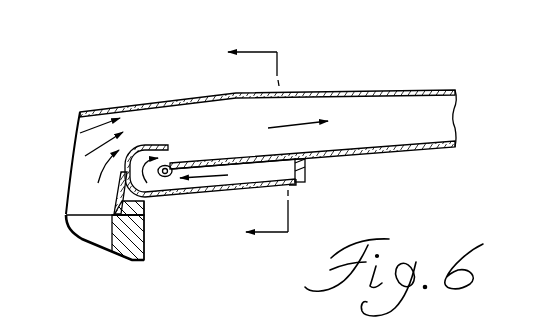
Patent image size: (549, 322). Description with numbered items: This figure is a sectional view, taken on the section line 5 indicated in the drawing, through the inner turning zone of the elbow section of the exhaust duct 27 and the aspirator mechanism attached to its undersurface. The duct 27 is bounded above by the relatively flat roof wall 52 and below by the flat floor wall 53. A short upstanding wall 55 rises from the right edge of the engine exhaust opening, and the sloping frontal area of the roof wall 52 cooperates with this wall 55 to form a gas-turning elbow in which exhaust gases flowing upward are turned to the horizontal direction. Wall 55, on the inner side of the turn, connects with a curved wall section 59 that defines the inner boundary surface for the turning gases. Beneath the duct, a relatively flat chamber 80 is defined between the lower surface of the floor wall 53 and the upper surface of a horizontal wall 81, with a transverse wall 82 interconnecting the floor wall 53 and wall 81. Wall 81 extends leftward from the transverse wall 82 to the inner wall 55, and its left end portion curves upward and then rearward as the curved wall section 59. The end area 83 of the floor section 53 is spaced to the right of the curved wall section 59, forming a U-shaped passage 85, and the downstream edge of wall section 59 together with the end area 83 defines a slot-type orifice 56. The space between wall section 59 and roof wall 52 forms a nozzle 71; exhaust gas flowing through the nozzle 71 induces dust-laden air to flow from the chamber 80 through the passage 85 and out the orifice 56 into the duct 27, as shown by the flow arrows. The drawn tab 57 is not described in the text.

The section line 5 is at (255, 142).
The duct 27 is at (417, 108).
The roof wall 52 is at (121, 111).
The floor wall 53 is at (372, 126).
The upstanding wall 55 is at (120, 182).
The orifice 56 is at (164, 157).
The mounting tab 57 is at (123, 205).
The curved wall section 59 is at (160, 143).
The nozzle 71 is at (141, 118).
The chamber 80 is at (254, 171).
The horizontal wall 81 is at (297, 184).
The transverse wall 82 is at (306, 170).
The end area of floor section 83 is at (170, 166).
The U-shaped passage 85 is at (120, 181).